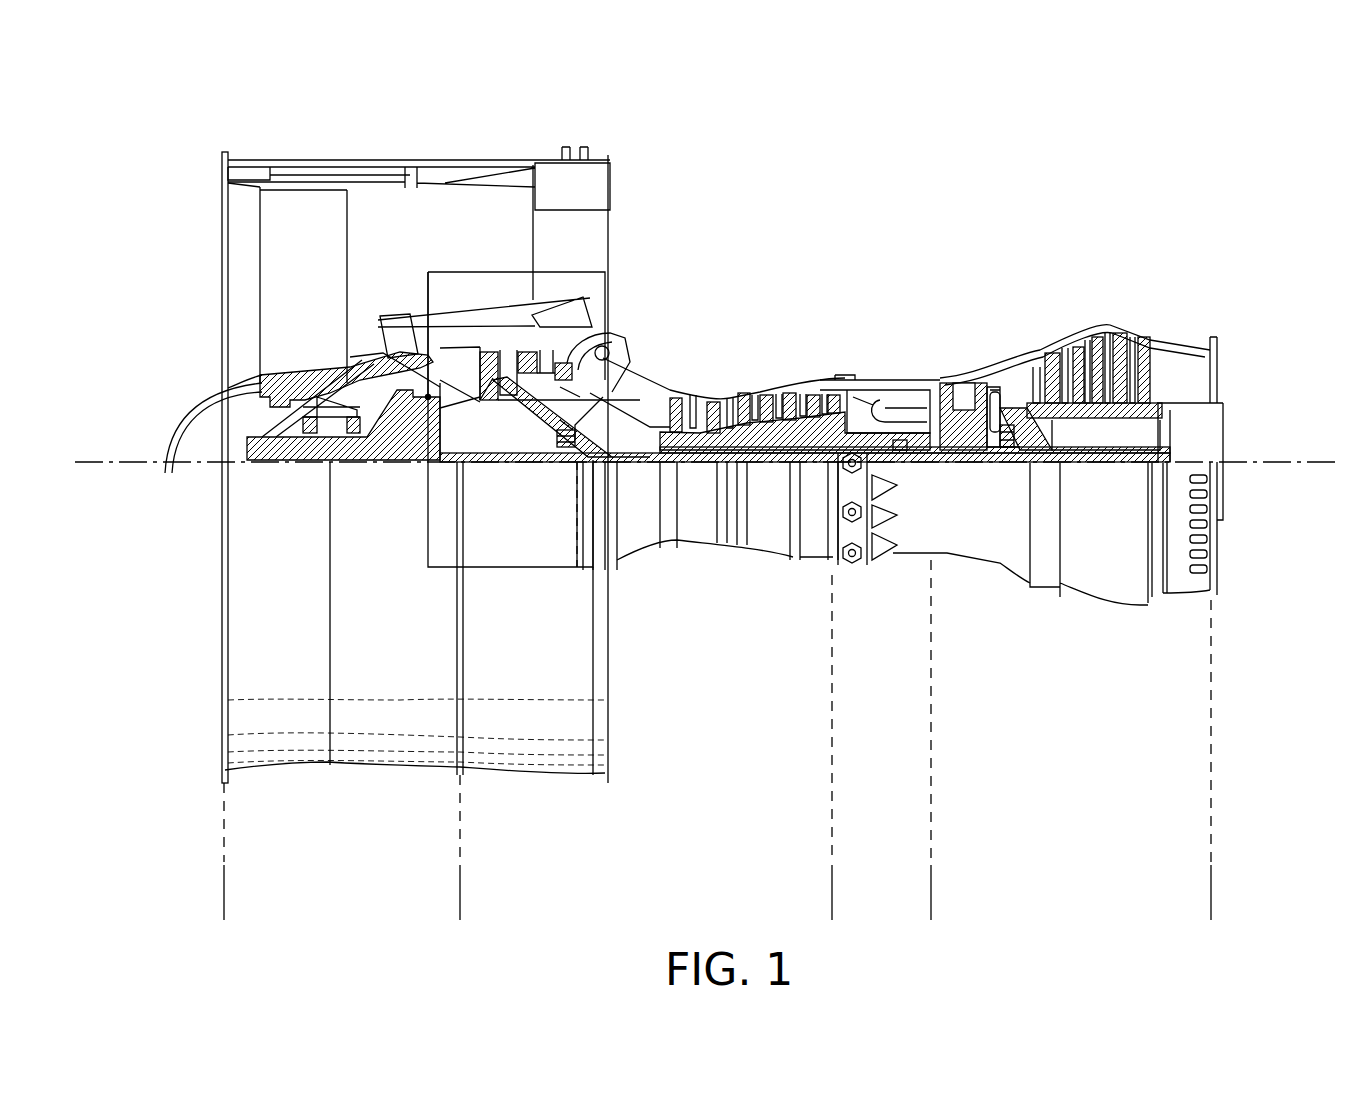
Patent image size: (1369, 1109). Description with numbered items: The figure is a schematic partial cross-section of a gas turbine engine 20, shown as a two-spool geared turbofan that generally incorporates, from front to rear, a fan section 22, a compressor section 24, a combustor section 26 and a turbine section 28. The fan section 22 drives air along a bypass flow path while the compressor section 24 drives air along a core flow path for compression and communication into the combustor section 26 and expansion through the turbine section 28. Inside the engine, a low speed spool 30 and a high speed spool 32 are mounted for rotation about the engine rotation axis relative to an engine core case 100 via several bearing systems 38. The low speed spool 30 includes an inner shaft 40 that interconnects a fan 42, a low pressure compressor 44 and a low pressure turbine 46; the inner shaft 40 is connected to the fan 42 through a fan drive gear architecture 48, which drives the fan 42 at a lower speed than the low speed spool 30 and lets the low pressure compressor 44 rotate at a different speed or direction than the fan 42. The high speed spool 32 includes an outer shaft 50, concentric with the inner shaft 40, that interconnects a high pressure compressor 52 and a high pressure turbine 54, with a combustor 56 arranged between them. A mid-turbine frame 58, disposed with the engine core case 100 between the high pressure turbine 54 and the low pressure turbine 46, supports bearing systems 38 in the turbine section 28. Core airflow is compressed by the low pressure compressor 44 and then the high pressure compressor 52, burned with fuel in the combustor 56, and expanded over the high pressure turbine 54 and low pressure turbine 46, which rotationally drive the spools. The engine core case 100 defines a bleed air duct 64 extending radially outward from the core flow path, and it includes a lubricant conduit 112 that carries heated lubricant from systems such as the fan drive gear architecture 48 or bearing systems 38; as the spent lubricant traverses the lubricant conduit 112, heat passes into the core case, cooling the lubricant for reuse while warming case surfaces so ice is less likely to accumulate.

The gas turbine engine 20 is at (852, 200).
The fan section 22 is at (448, 891).
The compressor section 24 is at (820, 891).
The combustor section 26 is at (919, 891).
The turbine section 28 is at (1199, 891).
The low speed spool 30 is at (762, 475).
The high speed spool 32 is at (800, 430).
The bearing systems 38 is at (557, 447).
The inner shaft 40 is at (640, 473).
The fan 42 is at (268, 236).
The low pressure compressor 44 is at (608, 330).
The low pressure turbine 46 is at (1100, 360).
The fan drive gear architecture 48 is at (428, 463).
The outer shaft 50 is at (962, 462).
The high pressure compressor 52 is at (770, 433).
The high pressure turbine 54 is at (967, 380).
The combustor 56 is at (890, 398).
The mid-turbine frame 58 is at (1017, 400).
The bleed air duct 64 is at (610, 334).
The engine core case 100 is at (915, 540).
The lubricant conduit 112 is at (428, 285).